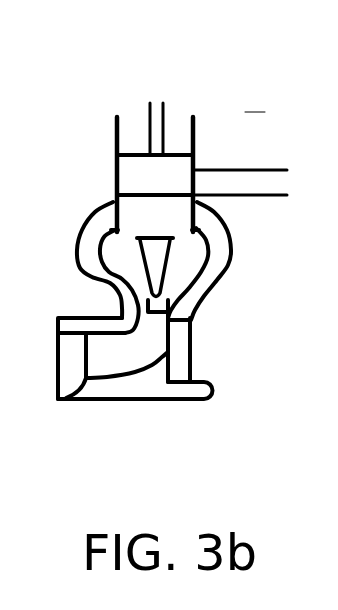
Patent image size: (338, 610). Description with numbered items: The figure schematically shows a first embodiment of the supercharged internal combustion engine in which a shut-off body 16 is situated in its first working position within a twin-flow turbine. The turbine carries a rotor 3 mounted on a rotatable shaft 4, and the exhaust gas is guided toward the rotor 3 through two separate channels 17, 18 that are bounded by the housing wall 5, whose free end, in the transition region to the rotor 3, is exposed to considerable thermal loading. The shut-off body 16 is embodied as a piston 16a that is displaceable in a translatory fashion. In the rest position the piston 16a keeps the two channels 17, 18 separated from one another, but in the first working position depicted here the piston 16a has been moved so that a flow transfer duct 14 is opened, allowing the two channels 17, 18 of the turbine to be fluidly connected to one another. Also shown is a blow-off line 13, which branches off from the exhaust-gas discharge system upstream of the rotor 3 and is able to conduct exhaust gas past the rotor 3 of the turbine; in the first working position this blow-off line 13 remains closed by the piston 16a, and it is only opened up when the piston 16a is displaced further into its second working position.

The rotor 3 is at (125, 358).
The rotatable shaft 4 is at (202, 375).
The housing wall 5 is at (152, 248).
The blow-off line 13 is at (252, 184).
The flow transfer duct 14 is at (155, 249).
The shut-off body 16 is at (142, 178).
The piston 16a is at (155, 175).
The channel 17 is at (112, 253).
The channel 18 is at (187, 260).